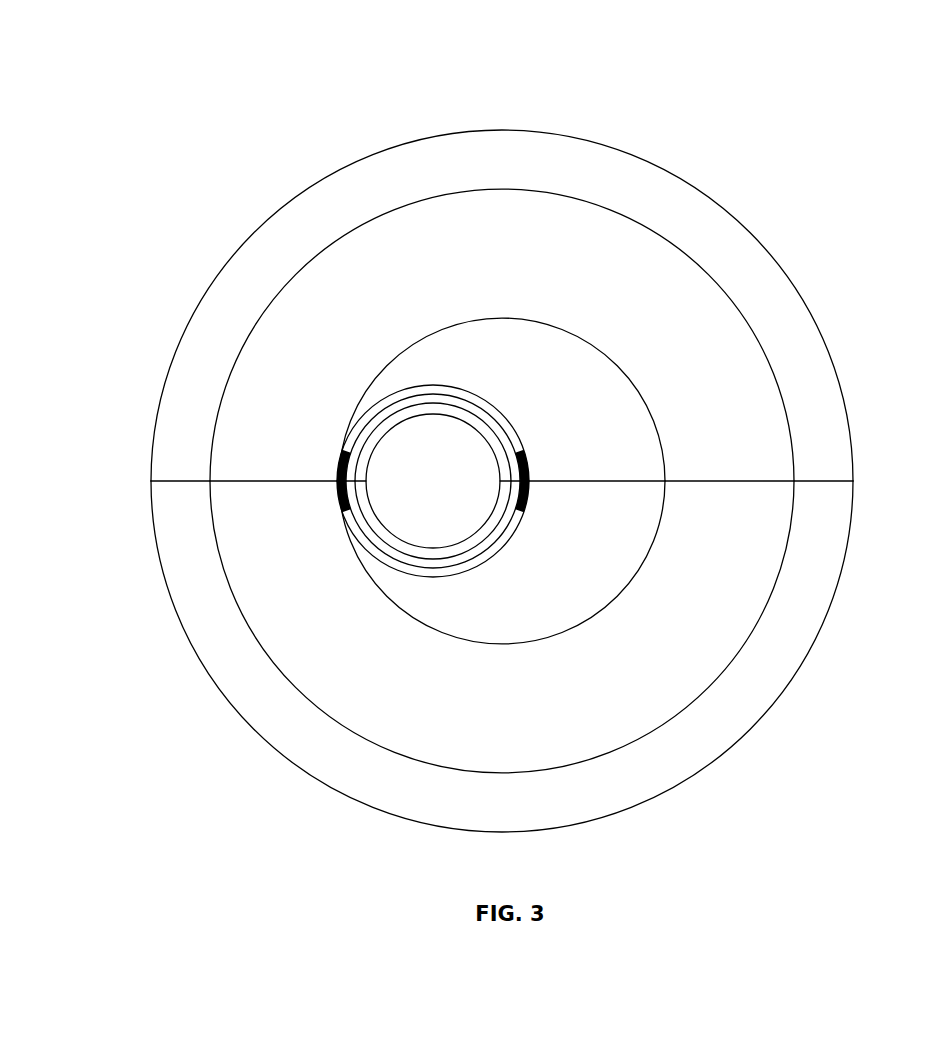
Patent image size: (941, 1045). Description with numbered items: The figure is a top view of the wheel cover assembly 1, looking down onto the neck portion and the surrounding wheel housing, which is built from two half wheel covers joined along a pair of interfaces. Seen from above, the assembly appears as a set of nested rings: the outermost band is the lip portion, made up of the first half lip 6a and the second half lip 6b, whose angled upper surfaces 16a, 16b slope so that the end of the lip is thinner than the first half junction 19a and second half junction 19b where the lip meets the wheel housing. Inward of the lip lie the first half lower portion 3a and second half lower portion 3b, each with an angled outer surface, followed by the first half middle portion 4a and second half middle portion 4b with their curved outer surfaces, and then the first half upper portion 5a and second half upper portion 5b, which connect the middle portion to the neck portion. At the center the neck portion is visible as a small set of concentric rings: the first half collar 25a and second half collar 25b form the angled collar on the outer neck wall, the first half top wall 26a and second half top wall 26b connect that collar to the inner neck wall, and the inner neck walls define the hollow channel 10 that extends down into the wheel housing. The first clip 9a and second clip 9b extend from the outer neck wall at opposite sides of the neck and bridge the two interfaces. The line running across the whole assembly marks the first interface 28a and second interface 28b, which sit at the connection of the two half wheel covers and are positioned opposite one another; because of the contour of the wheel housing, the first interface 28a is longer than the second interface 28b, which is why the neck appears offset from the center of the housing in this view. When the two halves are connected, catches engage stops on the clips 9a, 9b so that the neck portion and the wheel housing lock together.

The wheel cover assembly 1 is at (104, 281).
The first half lower portion 3a is at (685, 643).
The second half lower portion 3b is at (518, 223).
The first half middle portion 4a is at (530, 597).
The second half middle portion 4b is at (517, 365).
The first half upper portion 5a is at (518, 523).
The second half upper portion 5b is at (517, 432).
The first half lip 6a is at (807, 568).
The second half lip 6b is at (685, 222).
The first clip 9a is at (533, 505).
The second clip 9b is at (343, 500).
The hollow channel 10 is at (402, 493).
The angled upper surface 16a is at (488, 814).
The angled upper surface 16b is at (455, 178).
The first half junction 19a is at (368, 743).
The second half junction 19b is at (592, 203).
The first half collar 25a is at (505, 527).
The second half collar 25b is at (422, 397).
The first half top wall 26a is at (383, 535).
The second half top wall 26b is at (390, 418).
The first interface 28a is at (738, 481).
The second interface 28b is at (252, 478).